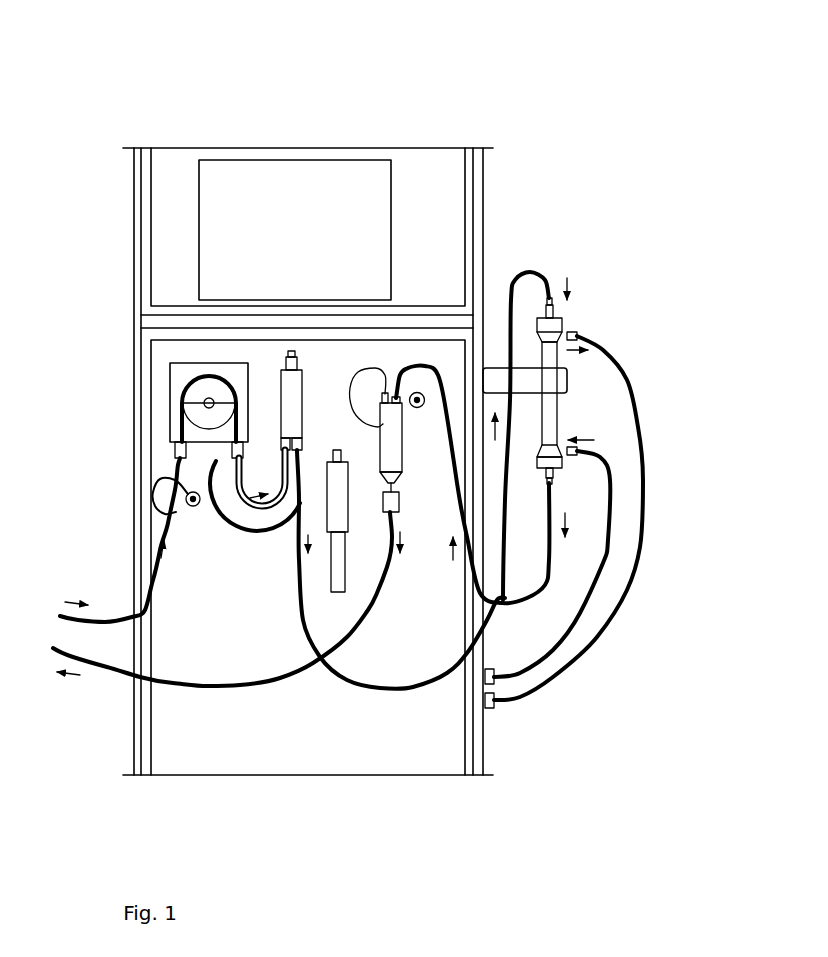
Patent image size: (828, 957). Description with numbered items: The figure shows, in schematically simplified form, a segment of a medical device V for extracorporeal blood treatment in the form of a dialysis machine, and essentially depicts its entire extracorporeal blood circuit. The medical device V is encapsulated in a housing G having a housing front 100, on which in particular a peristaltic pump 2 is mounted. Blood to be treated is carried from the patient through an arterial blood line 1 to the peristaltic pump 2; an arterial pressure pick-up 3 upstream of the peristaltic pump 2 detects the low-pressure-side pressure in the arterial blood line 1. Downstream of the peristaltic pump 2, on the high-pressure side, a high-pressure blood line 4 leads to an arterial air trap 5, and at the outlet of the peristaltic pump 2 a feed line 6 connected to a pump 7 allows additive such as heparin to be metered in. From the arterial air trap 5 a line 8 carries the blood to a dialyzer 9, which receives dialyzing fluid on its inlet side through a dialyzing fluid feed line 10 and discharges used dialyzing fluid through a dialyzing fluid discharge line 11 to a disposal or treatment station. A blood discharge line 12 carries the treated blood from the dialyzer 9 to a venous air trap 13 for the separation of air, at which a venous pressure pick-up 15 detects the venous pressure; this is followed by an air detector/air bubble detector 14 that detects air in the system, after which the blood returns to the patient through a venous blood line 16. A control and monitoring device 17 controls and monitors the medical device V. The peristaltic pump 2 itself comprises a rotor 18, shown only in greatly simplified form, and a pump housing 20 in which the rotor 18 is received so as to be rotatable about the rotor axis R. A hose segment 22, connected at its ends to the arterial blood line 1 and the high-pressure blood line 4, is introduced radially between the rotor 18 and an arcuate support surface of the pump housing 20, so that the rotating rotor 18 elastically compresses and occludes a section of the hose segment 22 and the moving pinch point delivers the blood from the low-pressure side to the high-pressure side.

The arterial blood line 1 is at (160, 570).
The peristaltic pump 2 is at (170, 384).
The arterial pressure pick-up 3 is at (186, 500).
The high-pressure blood line 4 is at (185, 457).
The arterial air trap 5 is at (283, 368).
The feed line 6 is at (238, 533).
The pump 7 is at (337, 446).
The line 8 is at (540, 274).
The dialyzer 9 is at (557, 415).
The dialyzing fluid feed line 10 is at (583, 453).
The dialyzing fluid discharge line 11 is at (587, 338).
The blood discharge line 12 is at (527, 603).
The venous air trap 13 is at (398, 450).
The air detector/air bubble detector 14 is at (400, 503).
The venous pressure pick-up 15 is at (425, 405).
The venous blood line 16 is at (107, 670).
The control and monitoring device 17 is at (391, 193).
The rotor 18 is at (195, 388).
The pump housing 20 is at (243, 372).
The hose segment 22 is at (217, 372).
The housing front 100 is at (167, 753).
The medical device V is at (152, 78).
The housing G is at (133, 178).
The rotor axis R is at (203, 393).